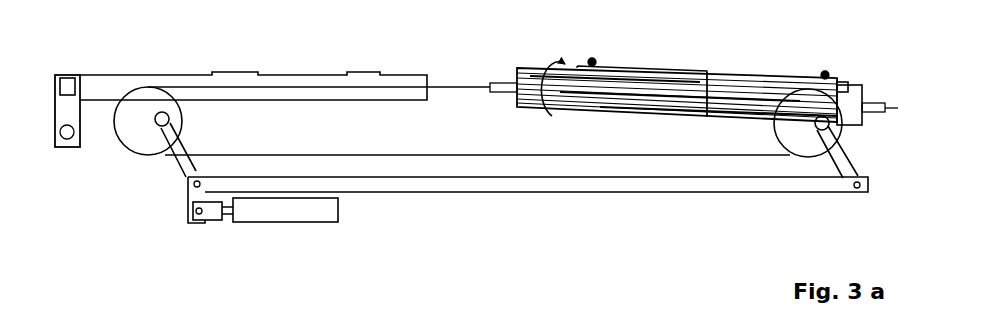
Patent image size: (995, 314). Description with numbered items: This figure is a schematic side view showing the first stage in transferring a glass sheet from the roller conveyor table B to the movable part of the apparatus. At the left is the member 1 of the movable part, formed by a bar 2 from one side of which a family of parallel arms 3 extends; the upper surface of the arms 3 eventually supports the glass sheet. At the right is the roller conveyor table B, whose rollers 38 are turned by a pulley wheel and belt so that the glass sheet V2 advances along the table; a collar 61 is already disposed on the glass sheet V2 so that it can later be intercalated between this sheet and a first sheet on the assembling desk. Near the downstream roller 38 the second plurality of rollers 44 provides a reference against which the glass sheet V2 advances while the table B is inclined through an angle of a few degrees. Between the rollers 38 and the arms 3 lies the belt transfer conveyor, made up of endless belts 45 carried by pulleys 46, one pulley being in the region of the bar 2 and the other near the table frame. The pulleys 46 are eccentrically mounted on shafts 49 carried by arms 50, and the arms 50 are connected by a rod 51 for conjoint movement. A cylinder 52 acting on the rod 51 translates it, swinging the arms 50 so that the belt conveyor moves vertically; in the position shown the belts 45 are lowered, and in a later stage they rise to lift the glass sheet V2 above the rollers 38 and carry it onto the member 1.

The member 1 is at (126, 31).
The bar 2 is at (65, 77).
The arms 3 is at (111, 82).
The roller conveyor table B is at (862, 48).
The roller 38 is at (637, 100).
The glass sheet V2 is at (707, 73).
The collar 61 is at (603, 59).
The second plurality of rollers 44 is at (850, 82).
The endless belts 45 is at (433, 158).
The pulleys 46 is at (128, 142).
The shafts 49 is at (155, 135).
The arms 50 is at (177, 165).
The rod 51 is at (360, 188).
The cylinder 52 is at (303, 212).